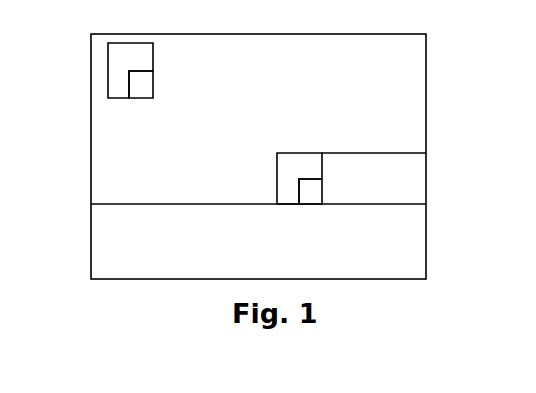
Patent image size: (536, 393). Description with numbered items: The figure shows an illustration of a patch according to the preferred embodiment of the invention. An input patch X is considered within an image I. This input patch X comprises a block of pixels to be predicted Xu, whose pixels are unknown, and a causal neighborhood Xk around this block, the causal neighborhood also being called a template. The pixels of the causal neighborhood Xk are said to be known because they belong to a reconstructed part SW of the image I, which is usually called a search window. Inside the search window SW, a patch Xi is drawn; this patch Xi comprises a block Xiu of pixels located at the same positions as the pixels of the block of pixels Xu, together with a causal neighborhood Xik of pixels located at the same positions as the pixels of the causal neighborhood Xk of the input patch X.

The image I is at (95, 113).
The search window SW is at (258, 125).
The patch Xi is at (126, 68).
The causal neighborhood of patch Xi Xik is at (118, 63).
The block of patch Xi Xiu is at (143, 87).
The input patch X is at (298, 171).
The causal neighborhood Xk is at (288, 172).
The block of pixels to be predicted Xu is at (311, 195).